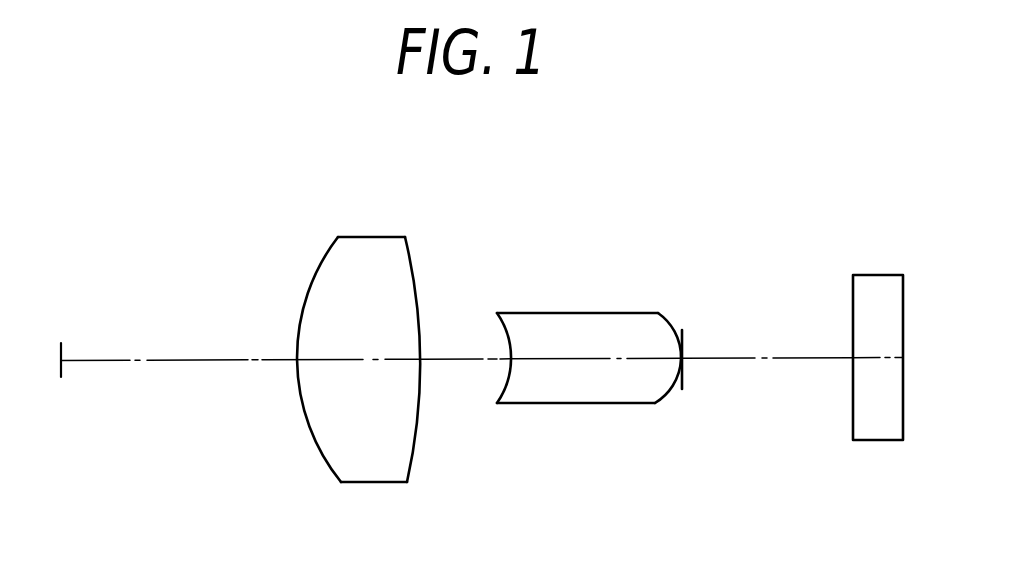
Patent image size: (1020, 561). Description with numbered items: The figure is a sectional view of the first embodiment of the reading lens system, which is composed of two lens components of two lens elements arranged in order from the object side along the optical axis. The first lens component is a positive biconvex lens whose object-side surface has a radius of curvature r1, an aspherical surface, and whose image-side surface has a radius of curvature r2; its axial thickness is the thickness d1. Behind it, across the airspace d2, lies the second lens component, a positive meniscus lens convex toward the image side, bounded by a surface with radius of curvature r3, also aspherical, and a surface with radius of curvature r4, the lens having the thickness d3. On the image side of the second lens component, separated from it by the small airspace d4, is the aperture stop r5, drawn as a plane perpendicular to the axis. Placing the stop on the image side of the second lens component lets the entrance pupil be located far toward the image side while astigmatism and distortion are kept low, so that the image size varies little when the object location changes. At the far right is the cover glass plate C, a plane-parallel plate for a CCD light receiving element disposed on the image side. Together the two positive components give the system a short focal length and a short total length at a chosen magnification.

The first surface radius of curvature r1 is at (321, 258).
The second surface radius of curvature r2 is at (406, 255).
The third surface radius of curvature r3 is at (496, 325).
The fourth surface radius of curvature r4 is at (668, 325).
The aperture stop r5 is at (684, 334).
The thickness of the first lens component d1 is at (343, 362).
The airspace between the first and second lens components d2 is at (455, 360).
The thickness of the second lens component d3 is at (560, 362).
The airspace between the second lens component and the aperture stop d4 is at (684, 362).
The cover glass plate C is at (875, 440).